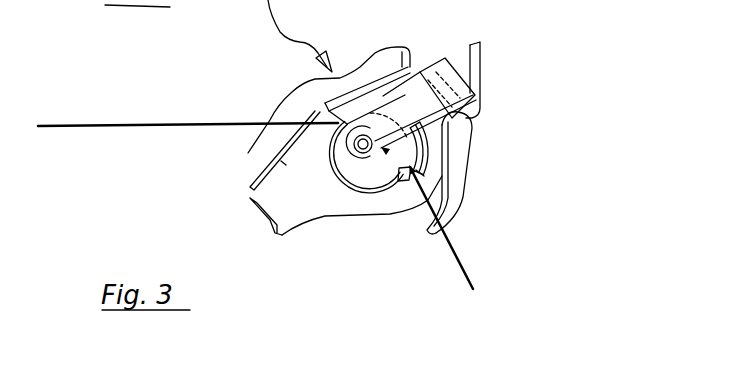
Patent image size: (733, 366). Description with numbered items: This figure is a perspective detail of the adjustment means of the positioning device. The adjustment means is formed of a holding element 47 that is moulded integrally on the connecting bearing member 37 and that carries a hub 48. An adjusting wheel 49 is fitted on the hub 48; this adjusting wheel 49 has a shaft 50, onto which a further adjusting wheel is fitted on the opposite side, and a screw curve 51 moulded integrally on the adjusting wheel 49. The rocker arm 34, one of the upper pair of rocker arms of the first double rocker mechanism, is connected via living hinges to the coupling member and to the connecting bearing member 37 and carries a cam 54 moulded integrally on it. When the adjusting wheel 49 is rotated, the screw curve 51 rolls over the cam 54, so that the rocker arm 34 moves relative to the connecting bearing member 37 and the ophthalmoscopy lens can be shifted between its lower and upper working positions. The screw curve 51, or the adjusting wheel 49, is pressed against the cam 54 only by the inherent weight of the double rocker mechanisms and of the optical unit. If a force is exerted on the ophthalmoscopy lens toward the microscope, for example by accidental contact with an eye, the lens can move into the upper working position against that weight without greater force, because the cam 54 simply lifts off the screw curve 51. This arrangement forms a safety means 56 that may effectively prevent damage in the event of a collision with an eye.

The rocker arm 34 is at (278, 139).
The connecting bearing member 37 is at (462, 60).
The holding element 47 is at (475, 95).
The hub 48 is at (423, 153).
The adjusting wheel 49 is at (358, 170).
The shaft 50 is at (372, 162).
The screw curve 51 is at (420, 173).
The cam 54 is at (322, 116).
The safety means 56 is at (251, 211).